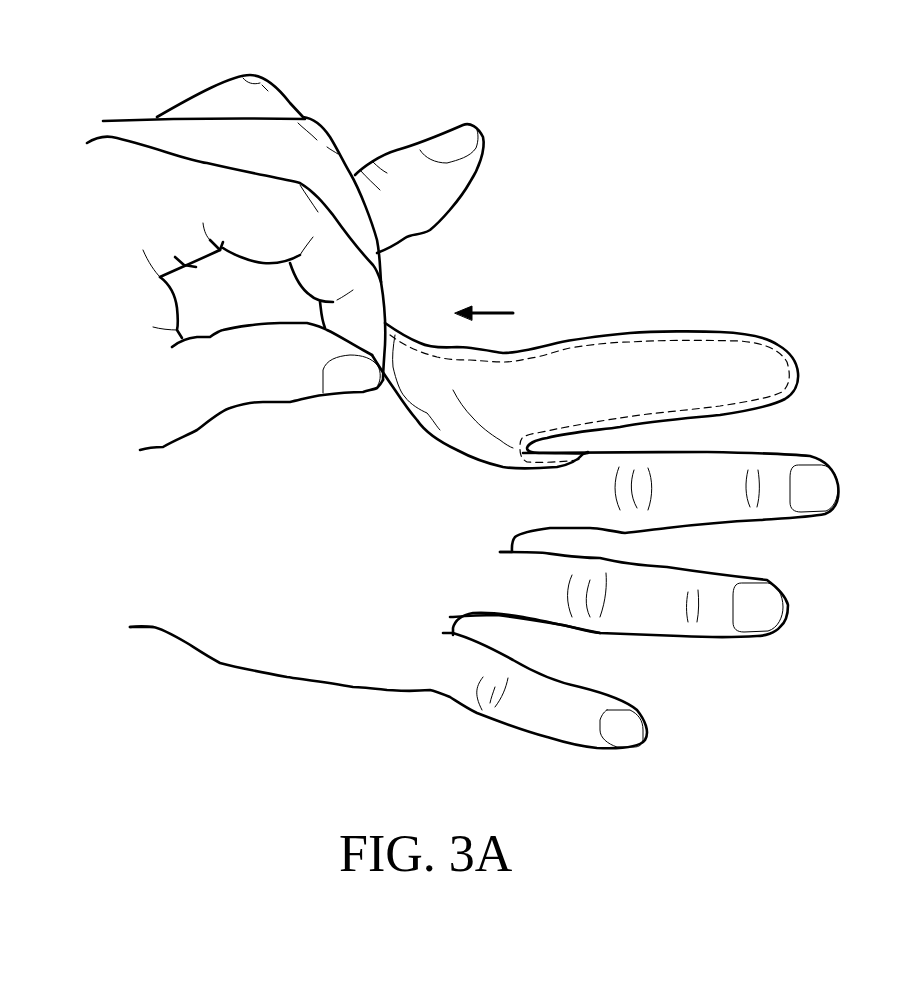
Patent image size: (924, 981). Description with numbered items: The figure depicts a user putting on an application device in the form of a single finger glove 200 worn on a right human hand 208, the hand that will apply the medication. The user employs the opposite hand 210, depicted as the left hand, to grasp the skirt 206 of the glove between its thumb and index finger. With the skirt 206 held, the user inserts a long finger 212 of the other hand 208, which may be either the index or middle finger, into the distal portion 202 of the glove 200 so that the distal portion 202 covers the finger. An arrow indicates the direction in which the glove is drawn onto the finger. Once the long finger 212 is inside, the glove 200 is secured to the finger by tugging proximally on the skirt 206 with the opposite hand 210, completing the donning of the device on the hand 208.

The single finger glove 200 is at (670, 287).
The distal portion 202 is at (705, 357).
The skirt 206 is at (412, 387).
The right human hand 208 is at (283, 660).
The opposite hand 210 is at (150, 167).
The long finger 212 is at (760, 383).